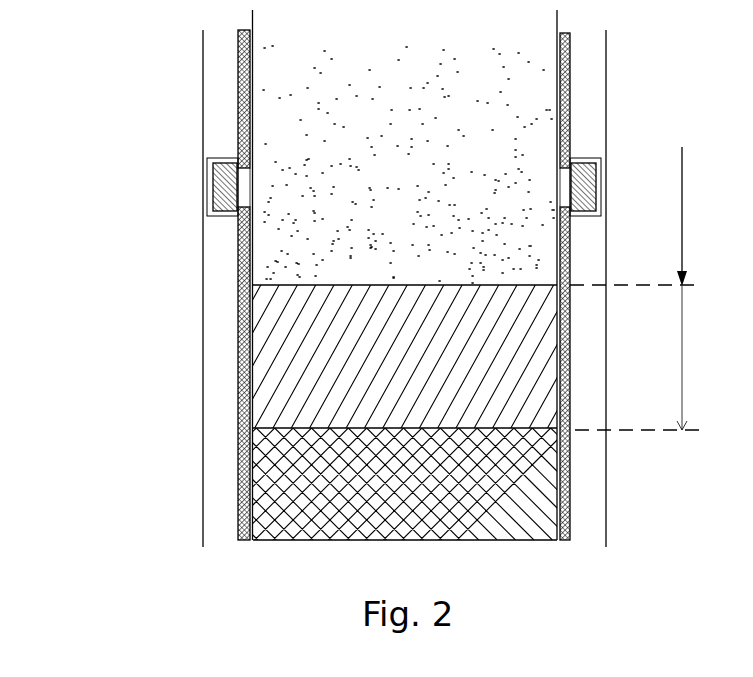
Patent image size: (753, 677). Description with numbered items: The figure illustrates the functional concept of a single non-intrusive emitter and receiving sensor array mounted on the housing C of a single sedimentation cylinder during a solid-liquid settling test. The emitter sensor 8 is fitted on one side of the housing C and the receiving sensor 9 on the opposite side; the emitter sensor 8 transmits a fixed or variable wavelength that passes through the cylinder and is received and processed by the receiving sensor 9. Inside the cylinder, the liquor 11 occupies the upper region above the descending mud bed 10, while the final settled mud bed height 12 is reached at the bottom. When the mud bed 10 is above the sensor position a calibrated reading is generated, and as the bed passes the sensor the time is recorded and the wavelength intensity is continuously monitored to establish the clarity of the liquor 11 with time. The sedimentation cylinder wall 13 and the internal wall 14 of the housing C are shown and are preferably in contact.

The emitter sensor 8 is at (600, 168).
The receiving sensor 9 is at (215, 154).
The mud bed 10 is at (262, 333).
The liquor 11 is at (545, 147).
The final settled mud bed height 12 is at (548, 512).
The sedimentation cylinder wall 13 is at (562, 63).
The internal wall 14 is at (570, 85).
The housing C is at (190, 296).